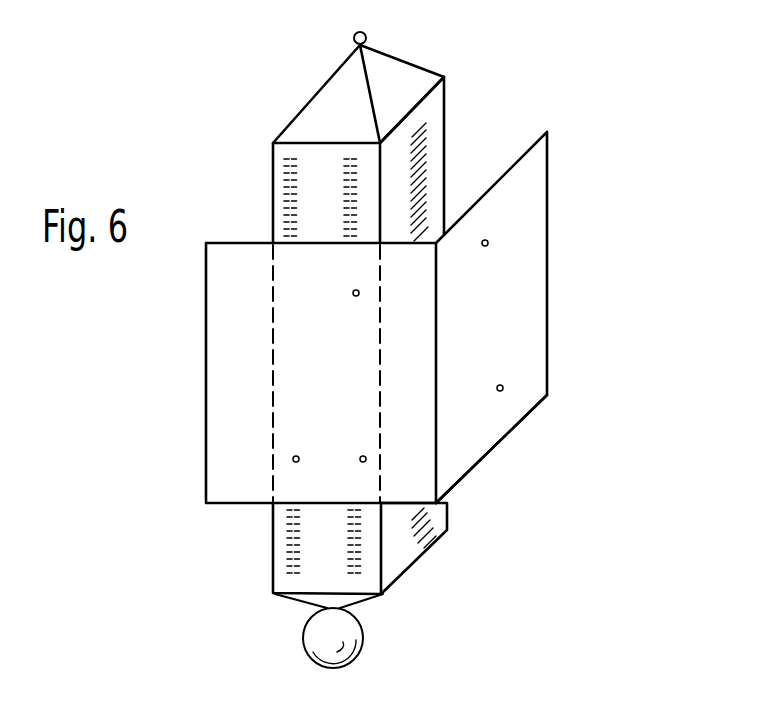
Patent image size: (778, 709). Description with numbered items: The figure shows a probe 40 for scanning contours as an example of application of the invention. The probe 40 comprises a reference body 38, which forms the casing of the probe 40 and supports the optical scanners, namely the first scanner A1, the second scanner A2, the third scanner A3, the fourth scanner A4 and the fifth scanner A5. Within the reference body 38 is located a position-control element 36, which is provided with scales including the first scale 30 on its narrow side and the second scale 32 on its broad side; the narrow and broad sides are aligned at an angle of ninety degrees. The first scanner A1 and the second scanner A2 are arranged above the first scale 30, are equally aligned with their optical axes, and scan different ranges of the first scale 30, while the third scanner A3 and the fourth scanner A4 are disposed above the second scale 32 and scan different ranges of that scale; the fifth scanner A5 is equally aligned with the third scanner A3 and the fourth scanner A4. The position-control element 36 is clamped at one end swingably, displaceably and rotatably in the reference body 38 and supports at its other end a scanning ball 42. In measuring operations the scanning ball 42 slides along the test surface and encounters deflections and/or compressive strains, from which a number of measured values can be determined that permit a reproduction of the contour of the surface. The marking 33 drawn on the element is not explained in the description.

The first scale 30 is at (422, 146).
The second scale 32 is at (351, 187).
The perforated fold line 33 is at (290, 200).
The position-control element 36 is at (438, 530).
The reference body 38 is at (500, 425).
The probe 40 is at (577, 292).
The scanning ball 42 is at (357, 637).
The first scanner A1 is at (502, 386).
The second scanner A2 is at (494, 239).
The third scanner A3 is at (366, 459).
The fourth scanner A4 is at (359, 293).
The fifth scanner A5 is at (299, 459).